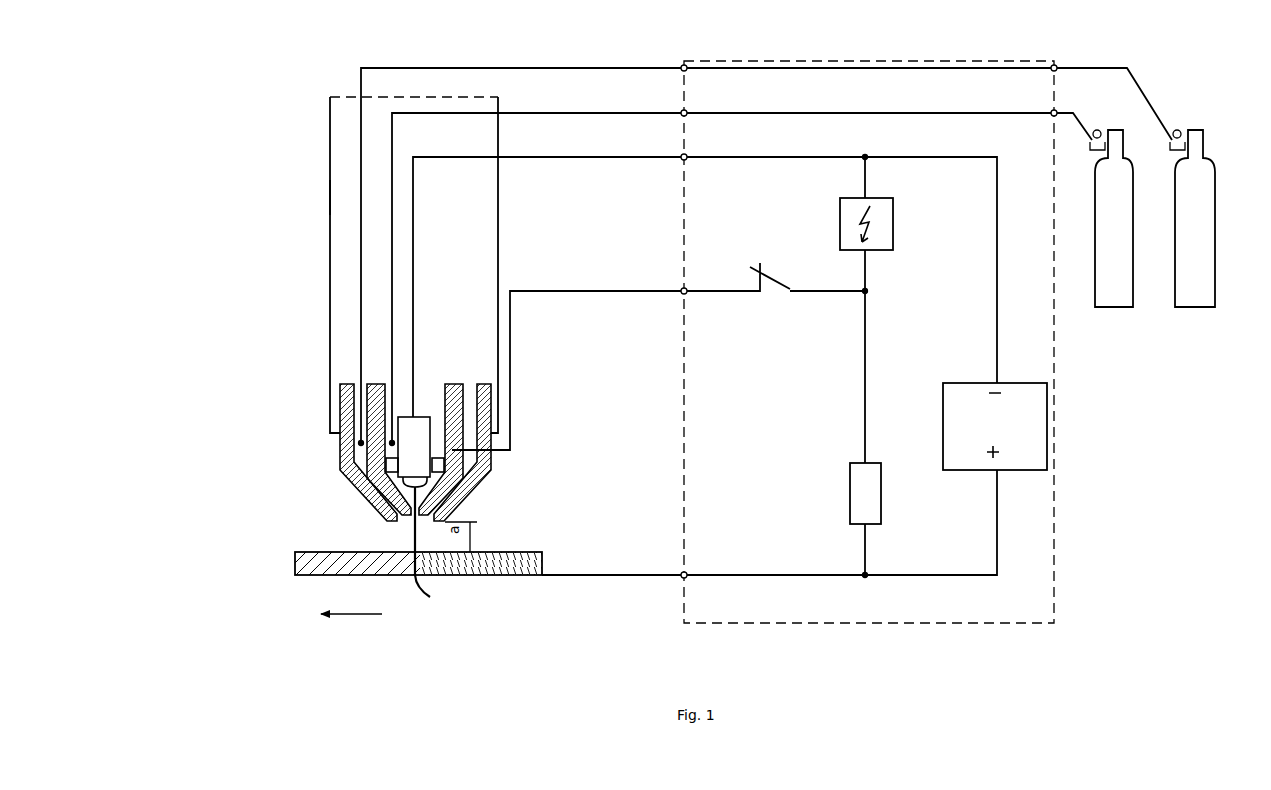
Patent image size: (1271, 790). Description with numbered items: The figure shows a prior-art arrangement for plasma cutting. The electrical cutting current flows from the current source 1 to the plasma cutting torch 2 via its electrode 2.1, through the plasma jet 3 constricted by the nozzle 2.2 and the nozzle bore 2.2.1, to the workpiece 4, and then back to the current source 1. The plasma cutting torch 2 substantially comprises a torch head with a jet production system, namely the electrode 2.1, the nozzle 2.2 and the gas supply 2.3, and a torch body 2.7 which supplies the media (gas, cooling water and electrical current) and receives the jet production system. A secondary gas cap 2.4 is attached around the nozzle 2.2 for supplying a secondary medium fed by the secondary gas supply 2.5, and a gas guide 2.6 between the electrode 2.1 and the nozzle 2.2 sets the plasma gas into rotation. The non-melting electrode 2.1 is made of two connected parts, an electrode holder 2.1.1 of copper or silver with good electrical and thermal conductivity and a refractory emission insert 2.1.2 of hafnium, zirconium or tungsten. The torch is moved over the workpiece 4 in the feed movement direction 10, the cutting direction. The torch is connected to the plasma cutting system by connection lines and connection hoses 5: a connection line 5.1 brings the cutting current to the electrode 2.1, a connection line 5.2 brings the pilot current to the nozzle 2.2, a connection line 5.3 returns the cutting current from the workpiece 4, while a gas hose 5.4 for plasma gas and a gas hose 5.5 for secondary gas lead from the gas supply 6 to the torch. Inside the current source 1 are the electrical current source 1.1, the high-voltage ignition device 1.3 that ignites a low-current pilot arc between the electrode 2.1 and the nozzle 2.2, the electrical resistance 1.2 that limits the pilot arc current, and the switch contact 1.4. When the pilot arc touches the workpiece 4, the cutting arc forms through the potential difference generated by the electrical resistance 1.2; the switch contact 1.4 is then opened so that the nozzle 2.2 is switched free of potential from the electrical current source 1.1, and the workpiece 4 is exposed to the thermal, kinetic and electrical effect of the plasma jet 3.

The current source 1 is at (854, 622).
The electrical current source 1.1 is at (973, 434).
The electrical resistance 1.2 is at (867, 483).
The high-voltage ignition device 1.3 is at (883, 212).
The switch contact 1.4 is at (809, 291).
The plasma cutting torch 2 is at (315, 148).
The electrode 2.1 is at (414, 418).
The electrode holder 2.1.1 is at (407, 435).
The emission insert 2.1.2 is at (447, 460).
The nozzle 2.2 is at (374, 422).
The nozzle bore 2.2.1 is at (453, 509).
The gas supply 2.3 is at (393, 306).
The secondary gas cap 2.4 is at (373, 497).
The secondary gas supply 2.5 is at (362, 339).
The gas guide 2.6 is at (447, 460).
The torch body 2.7 is at (330, 197).
The plasma jet 3 is at (418, 537).
The workpiece 4 is at (316, 565).
The connection lines and connection hoses 5 is at (614, 62).
The connection line, plasma cutting system—electrode for cutting current 5.1 is at (614, 157).
The connection line, plasma cutting system—nozzle for pilot current 5.2 is at (614, 291).
The connection line, plasma cutting system—workpiece for cutting current 5.3 is at (614, 575).
The gas hose for plasma gas 5.4 is at (614, 113).
The gas hose for secondary gas 5.5 is at (614, 68).
The gas supply 6 is at (1196, 136).
The feed movement direction of the plasma cutting torch 10 is at (351, 602).